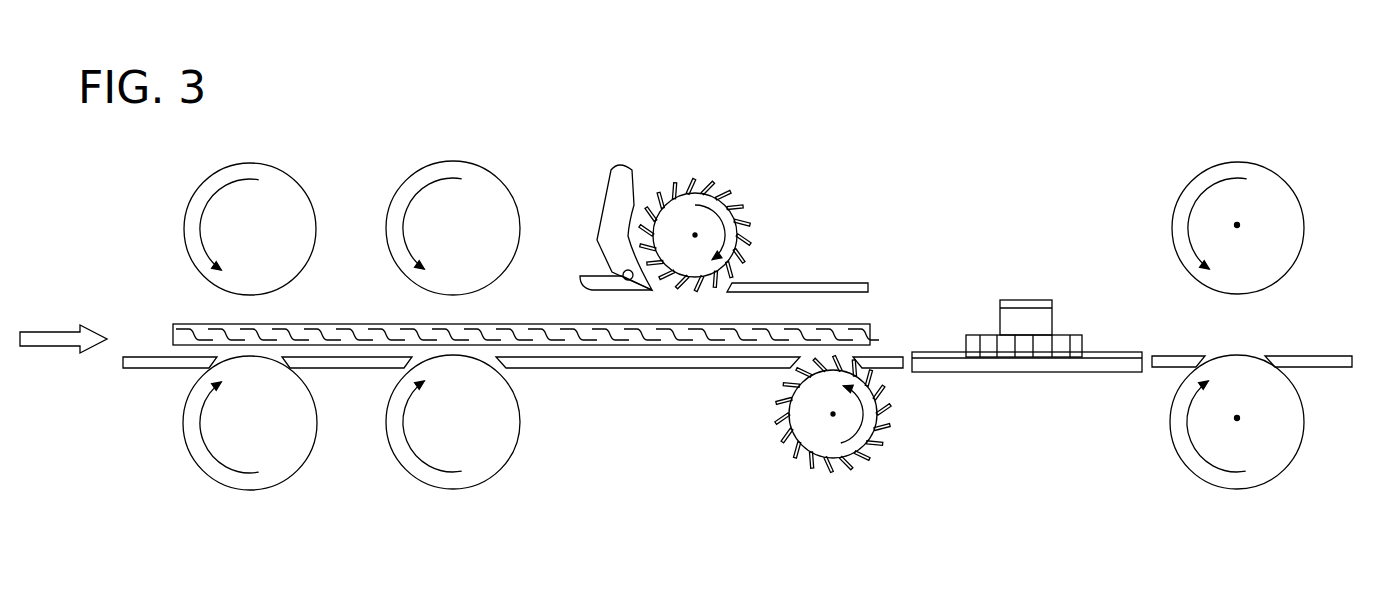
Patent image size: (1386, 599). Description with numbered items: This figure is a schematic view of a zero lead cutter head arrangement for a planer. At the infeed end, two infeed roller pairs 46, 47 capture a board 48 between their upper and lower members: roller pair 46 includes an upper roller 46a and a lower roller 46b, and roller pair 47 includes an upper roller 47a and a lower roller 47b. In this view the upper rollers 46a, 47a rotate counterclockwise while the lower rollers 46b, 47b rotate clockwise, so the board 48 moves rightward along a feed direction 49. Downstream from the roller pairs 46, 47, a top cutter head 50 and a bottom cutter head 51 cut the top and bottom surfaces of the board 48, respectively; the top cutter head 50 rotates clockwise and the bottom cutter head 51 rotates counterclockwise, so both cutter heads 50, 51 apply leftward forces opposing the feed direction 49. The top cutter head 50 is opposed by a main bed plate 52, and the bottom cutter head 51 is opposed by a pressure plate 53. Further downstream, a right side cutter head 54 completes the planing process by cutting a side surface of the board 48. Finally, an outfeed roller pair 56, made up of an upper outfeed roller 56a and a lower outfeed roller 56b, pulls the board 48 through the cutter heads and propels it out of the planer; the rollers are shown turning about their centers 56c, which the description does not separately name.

The infeed roller pair 46 is at (180, 196).
The upper roller 46a is at (185, 242).
The lower roller 46b is at (185, 448).
The infeed roller pair 47 is at (381, 193).
The upper roller 47a is at (519, 243).
The lower roller 47b is at (503, 462).
The board 48 is at (368, 323).
The feed direction 49 is at (57, 323).
The top cutter head 50 is at (727, 192).
The bottom cutter head 51 is at (867, 458).
The main bed plate 52 is at (583, 370).
The pressure plate 53 is at (853, 283).
The right side cutter head 54 is at (1063, 342).
The outfeed roller pair 56 is at (1176, 177).
The upper outfeed roller 56a is at (1298, 197).
The lower outfeed roller 56b is at (1287, 463).
The roller axle 56c is at (1237, 225).